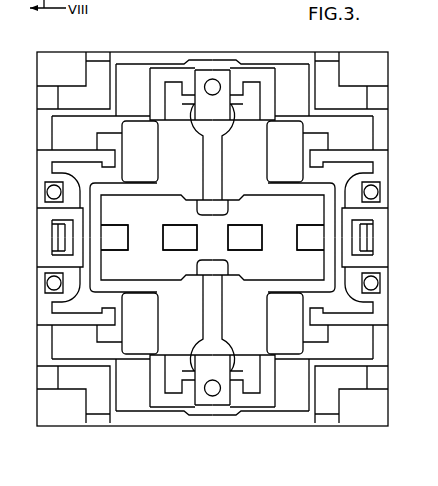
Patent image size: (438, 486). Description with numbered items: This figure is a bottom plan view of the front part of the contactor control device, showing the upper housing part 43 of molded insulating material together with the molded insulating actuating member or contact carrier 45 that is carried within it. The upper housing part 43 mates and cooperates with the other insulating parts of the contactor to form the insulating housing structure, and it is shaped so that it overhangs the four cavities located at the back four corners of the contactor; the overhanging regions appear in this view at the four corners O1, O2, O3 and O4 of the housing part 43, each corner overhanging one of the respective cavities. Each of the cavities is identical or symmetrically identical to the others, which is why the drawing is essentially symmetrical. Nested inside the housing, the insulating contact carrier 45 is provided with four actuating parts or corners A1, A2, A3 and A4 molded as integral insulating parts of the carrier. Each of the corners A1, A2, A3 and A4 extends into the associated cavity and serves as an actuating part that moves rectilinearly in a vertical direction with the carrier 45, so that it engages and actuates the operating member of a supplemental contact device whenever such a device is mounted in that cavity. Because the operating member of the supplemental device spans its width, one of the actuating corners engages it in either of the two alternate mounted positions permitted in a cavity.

The upper housing part 43 is at (46, 72).
The contact carrier 45 is at (162, 220).
The corner O1 is at (376, 58).
The corner O2 is at (58, 58).
The corner O3 is at (370, 416).
The corner O4 is at (62, 416).
The actuating part A1 is at (293, 130).
The actuating part A2 is at (132, 128).
The actuating part A3 is at (293, 341).
The actuating part A4 is at (139, 341).